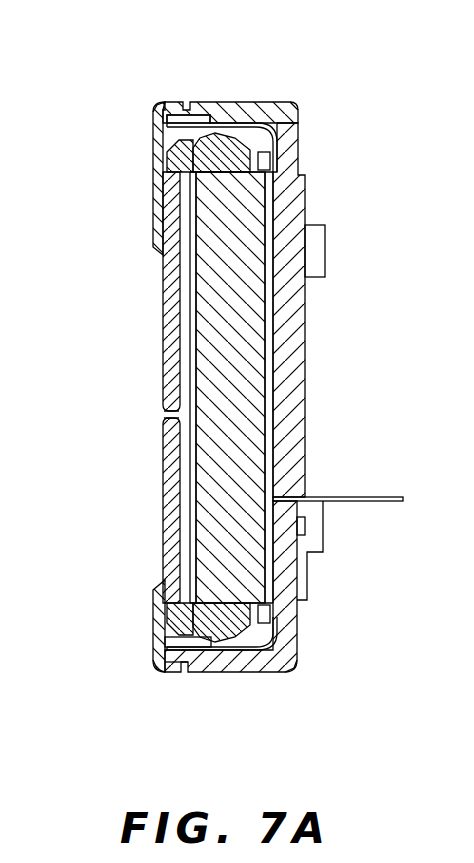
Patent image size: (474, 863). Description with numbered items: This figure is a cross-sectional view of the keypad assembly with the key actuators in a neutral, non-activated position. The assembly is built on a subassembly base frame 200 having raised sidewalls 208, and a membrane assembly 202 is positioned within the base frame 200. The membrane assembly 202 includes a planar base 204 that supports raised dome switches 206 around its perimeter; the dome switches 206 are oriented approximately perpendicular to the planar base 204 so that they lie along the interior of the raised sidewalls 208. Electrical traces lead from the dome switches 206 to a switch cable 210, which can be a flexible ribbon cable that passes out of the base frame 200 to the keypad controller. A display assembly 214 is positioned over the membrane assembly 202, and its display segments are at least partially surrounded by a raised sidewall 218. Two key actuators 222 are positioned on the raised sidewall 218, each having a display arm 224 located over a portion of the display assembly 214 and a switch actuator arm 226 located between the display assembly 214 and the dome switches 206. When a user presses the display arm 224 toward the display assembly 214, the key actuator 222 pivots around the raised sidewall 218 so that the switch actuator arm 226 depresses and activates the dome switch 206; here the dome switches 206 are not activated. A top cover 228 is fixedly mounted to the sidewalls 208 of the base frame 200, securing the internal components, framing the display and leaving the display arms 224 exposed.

The subassembly base frame 200 is at (296, 114).
The membrane assembly 202 is at (285, 134).
The planar base 204 is at (273, 232).
The dome switch 206 is at (210, 118).
The raised sidewall 208 is at (225, 128).
The switch cable 210 is at (353, 497).
The display assembly 214 is at (232, 337).
The raised sidewall 218 is at (172, 213).
The key actuator 222 is at (177, 157).
The display arm 224 is at (163, 357).
The switch actuator arm 226 is at (237, 150).
The top cover 228 is at (157, 112).